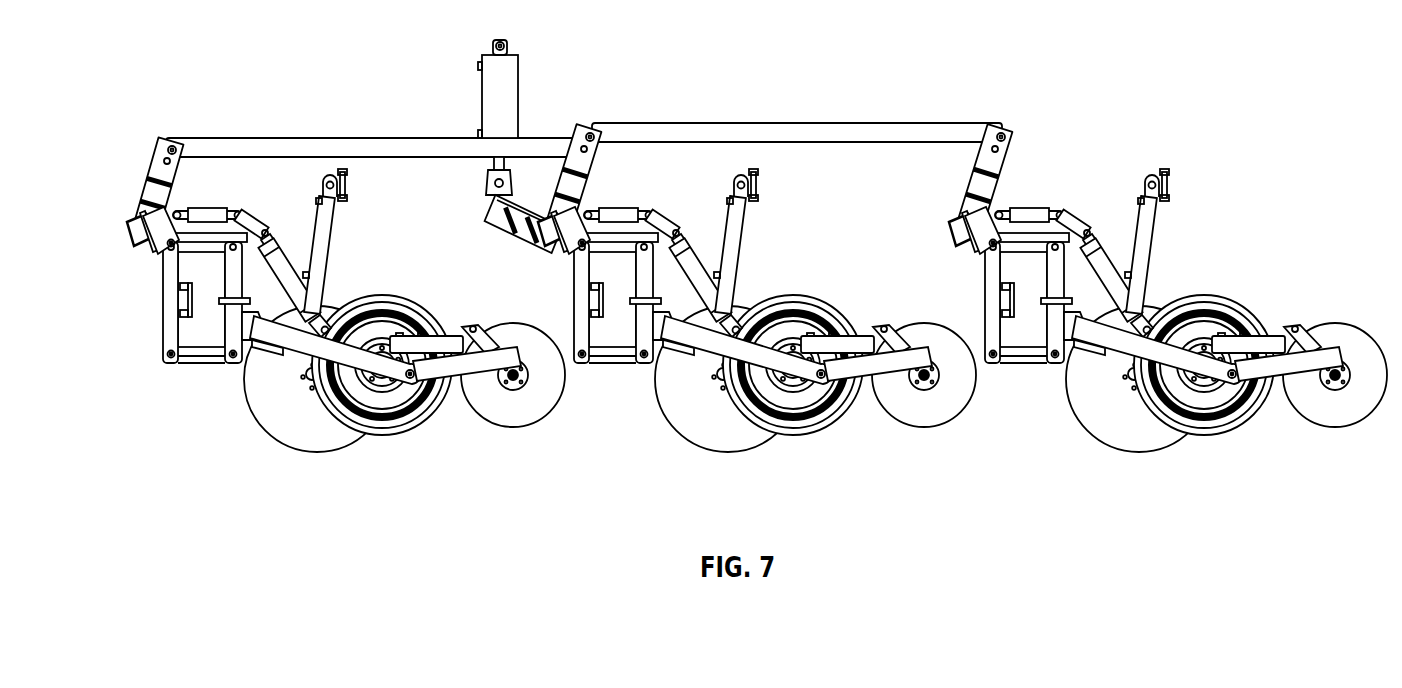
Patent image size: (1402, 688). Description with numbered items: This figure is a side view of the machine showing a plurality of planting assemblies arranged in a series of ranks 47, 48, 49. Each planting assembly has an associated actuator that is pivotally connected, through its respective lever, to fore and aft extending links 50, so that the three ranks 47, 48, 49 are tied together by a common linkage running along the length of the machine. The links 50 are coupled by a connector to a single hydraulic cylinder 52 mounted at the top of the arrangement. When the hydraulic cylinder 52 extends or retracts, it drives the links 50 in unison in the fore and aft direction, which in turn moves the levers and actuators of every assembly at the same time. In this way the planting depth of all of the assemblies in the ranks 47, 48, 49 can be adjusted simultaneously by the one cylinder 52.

The rank 47 is at (318, 450).
The rank 48 is at (728, 394).
The rank 49 is at (1139, 394).
The link 50 is at (323, 138).
The hydraulic cylinder 52 is at (518, 92).